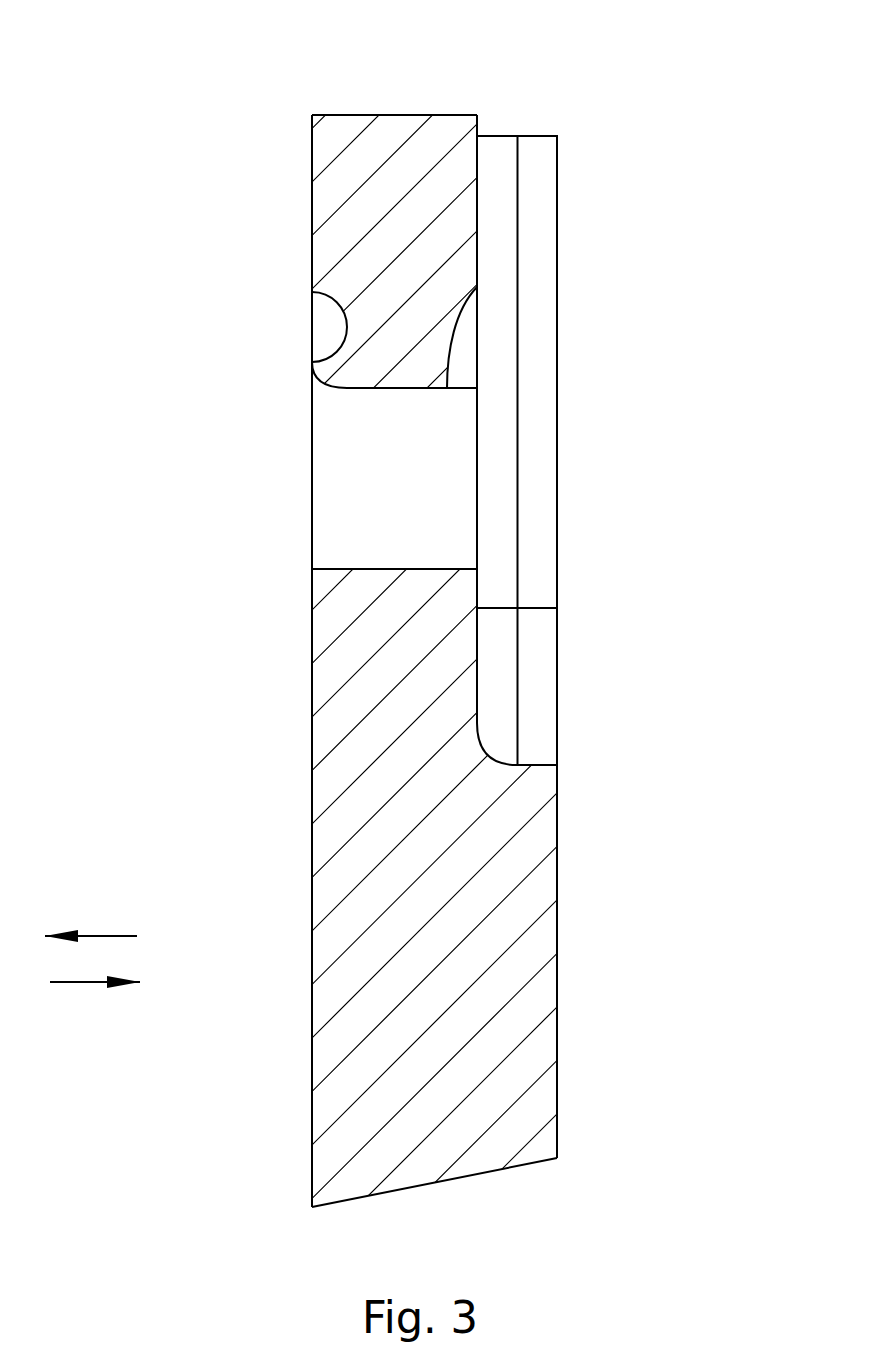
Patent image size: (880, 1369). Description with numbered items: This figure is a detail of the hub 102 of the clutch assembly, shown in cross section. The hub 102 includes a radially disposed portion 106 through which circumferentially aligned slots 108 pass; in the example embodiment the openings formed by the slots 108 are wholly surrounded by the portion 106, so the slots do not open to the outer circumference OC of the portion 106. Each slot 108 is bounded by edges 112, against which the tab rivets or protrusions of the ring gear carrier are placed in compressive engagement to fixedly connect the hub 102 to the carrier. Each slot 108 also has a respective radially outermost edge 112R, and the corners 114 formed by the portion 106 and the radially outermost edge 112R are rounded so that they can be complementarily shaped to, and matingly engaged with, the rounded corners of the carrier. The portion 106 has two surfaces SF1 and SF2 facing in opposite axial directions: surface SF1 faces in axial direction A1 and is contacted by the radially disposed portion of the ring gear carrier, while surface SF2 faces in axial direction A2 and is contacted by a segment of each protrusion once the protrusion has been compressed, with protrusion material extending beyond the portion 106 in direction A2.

The hub 102 is at (470, 82).
The radially disposed portion 106 is at (311, 161).
The slot 108 is at (463, 406).
The edge 112 is at (377, 569).
The radially outermost edge 112R is at (477, 287).
The corner 114 is at (312, 292).
The outer circumference OC is at (353, 115).
The surface SF1 is at (311, 218).
The surface SF2 is at (478, 197).
The axial direction A1 is at (116, 936).
The axial direction A2 is at (82, 983).